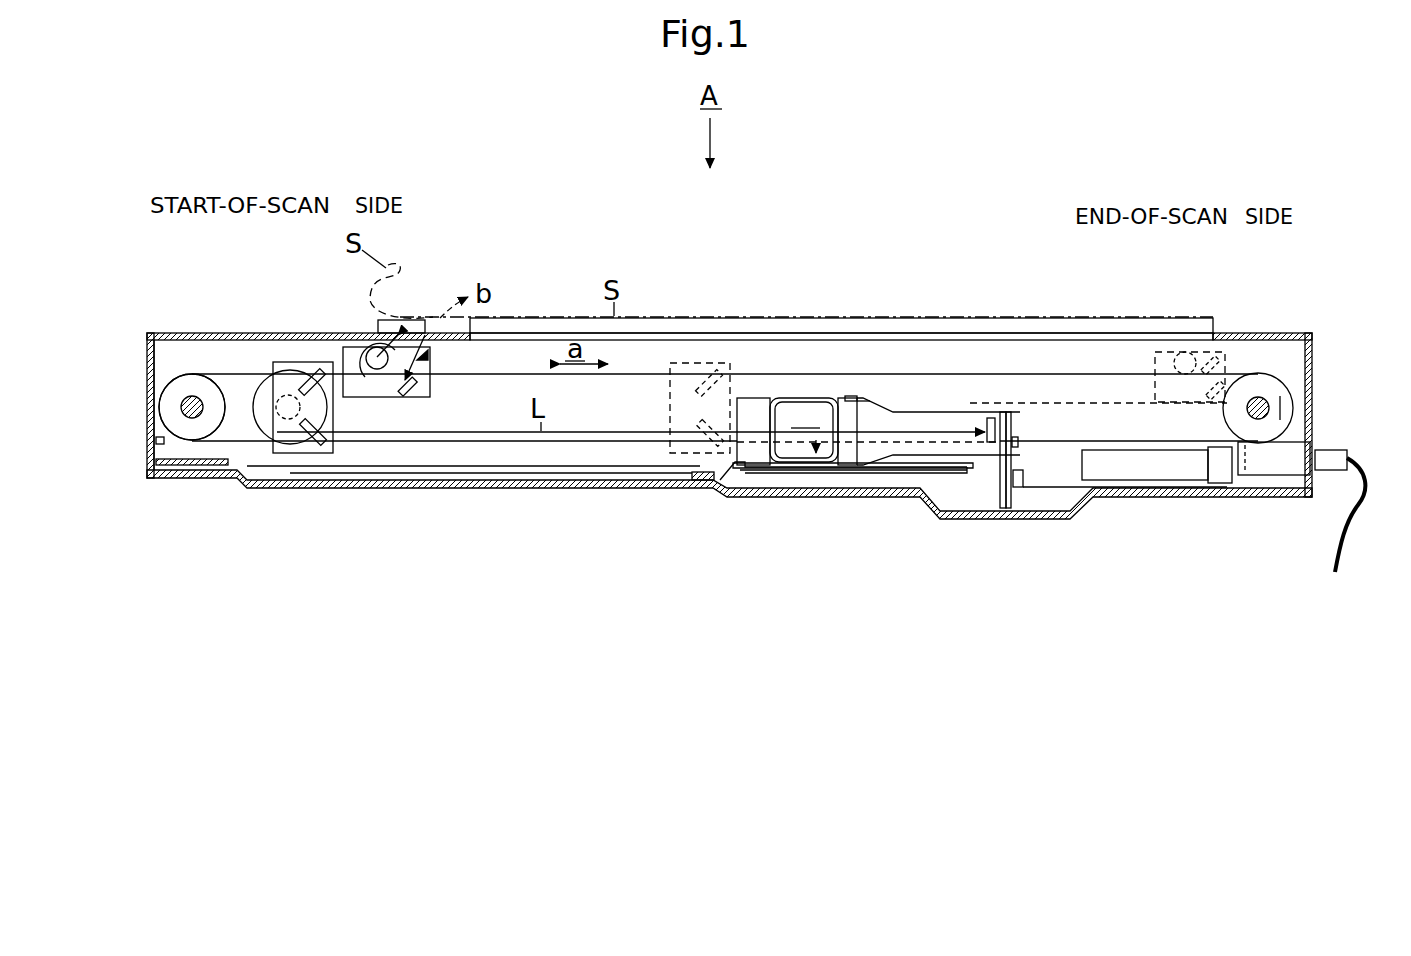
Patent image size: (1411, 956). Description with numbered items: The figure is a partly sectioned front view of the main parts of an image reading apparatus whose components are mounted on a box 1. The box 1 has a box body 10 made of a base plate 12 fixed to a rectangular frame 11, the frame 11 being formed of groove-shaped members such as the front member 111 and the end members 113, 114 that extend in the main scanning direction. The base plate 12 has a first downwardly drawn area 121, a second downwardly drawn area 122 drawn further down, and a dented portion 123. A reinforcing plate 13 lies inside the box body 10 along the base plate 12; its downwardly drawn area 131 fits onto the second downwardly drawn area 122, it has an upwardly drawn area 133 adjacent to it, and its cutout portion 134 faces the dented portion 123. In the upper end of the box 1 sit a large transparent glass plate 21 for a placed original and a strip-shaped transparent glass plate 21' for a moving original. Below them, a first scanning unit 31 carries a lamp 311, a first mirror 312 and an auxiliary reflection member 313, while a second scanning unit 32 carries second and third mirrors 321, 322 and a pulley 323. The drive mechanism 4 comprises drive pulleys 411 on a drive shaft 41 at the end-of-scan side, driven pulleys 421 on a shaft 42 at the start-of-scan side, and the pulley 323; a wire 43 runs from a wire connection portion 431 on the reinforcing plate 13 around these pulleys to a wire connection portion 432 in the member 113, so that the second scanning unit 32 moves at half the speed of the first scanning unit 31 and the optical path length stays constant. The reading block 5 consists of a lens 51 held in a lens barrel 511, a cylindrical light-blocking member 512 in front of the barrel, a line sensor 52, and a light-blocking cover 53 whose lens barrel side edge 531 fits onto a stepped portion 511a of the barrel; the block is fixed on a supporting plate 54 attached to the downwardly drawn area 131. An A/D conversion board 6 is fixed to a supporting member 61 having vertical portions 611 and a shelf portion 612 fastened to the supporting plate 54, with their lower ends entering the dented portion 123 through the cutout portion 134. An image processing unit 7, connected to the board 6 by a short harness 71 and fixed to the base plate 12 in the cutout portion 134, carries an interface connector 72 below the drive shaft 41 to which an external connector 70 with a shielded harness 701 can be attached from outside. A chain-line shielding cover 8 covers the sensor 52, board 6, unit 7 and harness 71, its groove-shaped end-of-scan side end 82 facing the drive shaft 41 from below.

The box 1 is at (732, 425).
The box body 10 is at (732, 425).
The rectangular frame 11 is at (732, 390).
The groove-shaped member 111 is at (152, 334).
The groove-shaped member 113 is at (148, 356).
The groove-shaped member 114 is at (1312, 342).
The base plate 12 is at (729, 531).
The first downwardly drawn area 121 is at (538, 468).
The second downwardly drawn area 122 is at (880, 498).
The dented portion 123 is at (952, 510).
The reinforcing plate 13 is at (752, 486).
The downwardly drawn area 131 is at (789, 496).
The upwardly drawn area 133 is at (912, 440).
The cutout portion 134 is at (1033, 494).
The transparent glass plate 21 is at (841, 307).
The transparent glass plate 21' is at (426, 342).
The first scanning unit 31 is at (793, 357).
The lamp 311 is at (375, 368).
The first mirror 312 is at (409, 392).
The auxiliary reflection member 313 is at (428, 355).
The second scanning unit 32 is at (481, 403).
The second mirror 321 is at (316, 368).
The third mirror 322 is at (318, 452).
The pulley 323 is at (267, 440).
The drive mechanism 4 is at (736, 399).
The drive shaft 41 is at (1302, 392).
The drive pulley 411 is at (1294, 405).
The shaft 42 is at (157, 410).
The driven pulley 421 is at (186, 407).
The wire 43 is at (253, 372).
The wire connection portion 431 is at (834, 497).
The wire connection portion 432 is at (158, 446).
The reading block 5 is at (874, 394).
The lens 51 is at (804, 430).
The lens barrel 511 is at (826, 398).
The stepped portion 511a is at (848, 396).
The cylindrical light-blocking member 512 is at (752, 398).
The line sensor 52 is at (998, 412).
The light-blocking cover 53 is at (945, 400).
The lens barrel side edge 531 is at (866, 400).
The supporting plate 54 is at (917, 500).
The A/D conversion board 6 is at (992, 506).
The supporting member 61 is at (1003, 510).
The portion 611 is at (984, 500).
The shelf portion 612 is at (950, 465).
The image processing unit 7 is at (1140, 421).
The external connector 70 is at (1363, 497).
The shielded harness 701 is at (1348, 535).
The harness 71 is at (1030, 484).
The interface connector 72 is at (1250, 472).
The shielding cover 8 is at (1069, 398).
The end-of-scan side end 82 is at (1268, 472).